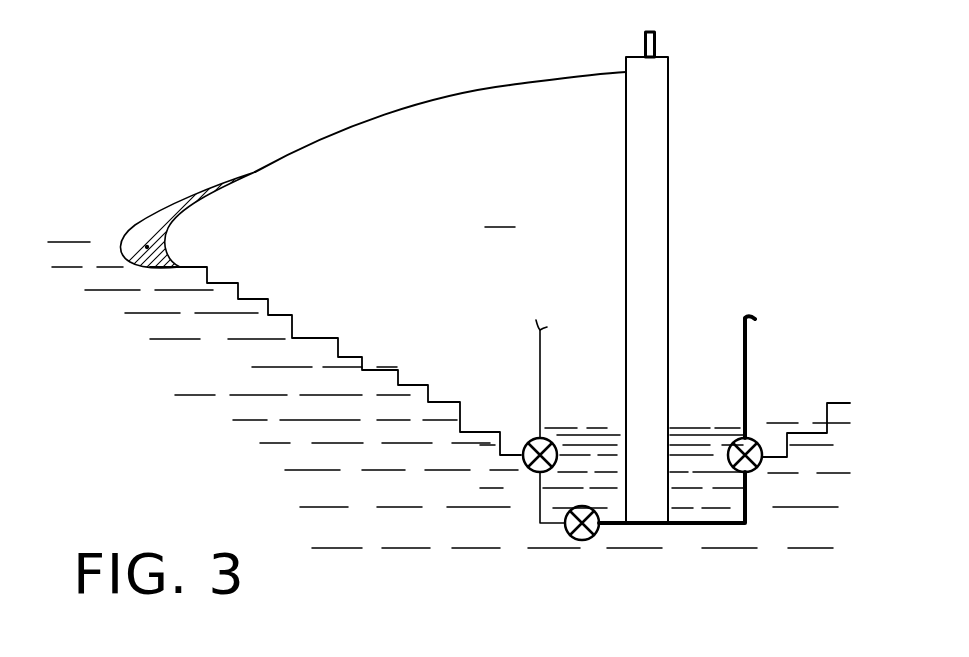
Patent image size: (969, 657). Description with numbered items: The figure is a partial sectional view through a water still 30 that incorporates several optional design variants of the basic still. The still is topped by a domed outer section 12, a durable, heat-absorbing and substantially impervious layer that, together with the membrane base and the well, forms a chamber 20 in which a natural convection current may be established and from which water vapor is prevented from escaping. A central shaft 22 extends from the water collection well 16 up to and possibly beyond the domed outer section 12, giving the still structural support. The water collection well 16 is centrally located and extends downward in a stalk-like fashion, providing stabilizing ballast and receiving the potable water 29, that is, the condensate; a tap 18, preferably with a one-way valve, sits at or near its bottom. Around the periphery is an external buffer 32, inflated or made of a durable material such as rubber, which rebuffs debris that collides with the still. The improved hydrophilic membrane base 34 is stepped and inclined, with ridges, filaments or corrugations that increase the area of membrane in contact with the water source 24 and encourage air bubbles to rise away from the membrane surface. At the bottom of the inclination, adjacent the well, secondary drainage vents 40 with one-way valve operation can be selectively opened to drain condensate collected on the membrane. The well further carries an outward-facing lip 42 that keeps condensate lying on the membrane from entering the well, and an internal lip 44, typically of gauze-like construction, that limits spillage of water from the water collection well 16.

The domed outer section 12 is at (473, 92).
The water collection well 16 is at (708, 527).
The tap 18 is at (587, 540).
The chamber 20 is at (500, 211).
The central shaft 22 is at (623, 105).
The water source 24 is at (238, 367).
The potable water 29 is at (682, 498).
The water still 30 is at (333, 113).
The external buffer 32 is at (150, 203).
The hydrophilic membrane base 34 is at (377, 370).
The secondary drainage vents 40 is at (533, 470).
The outward-facing lip 42 is at (538, 322).
The internal lip 44 is at (550, 325).